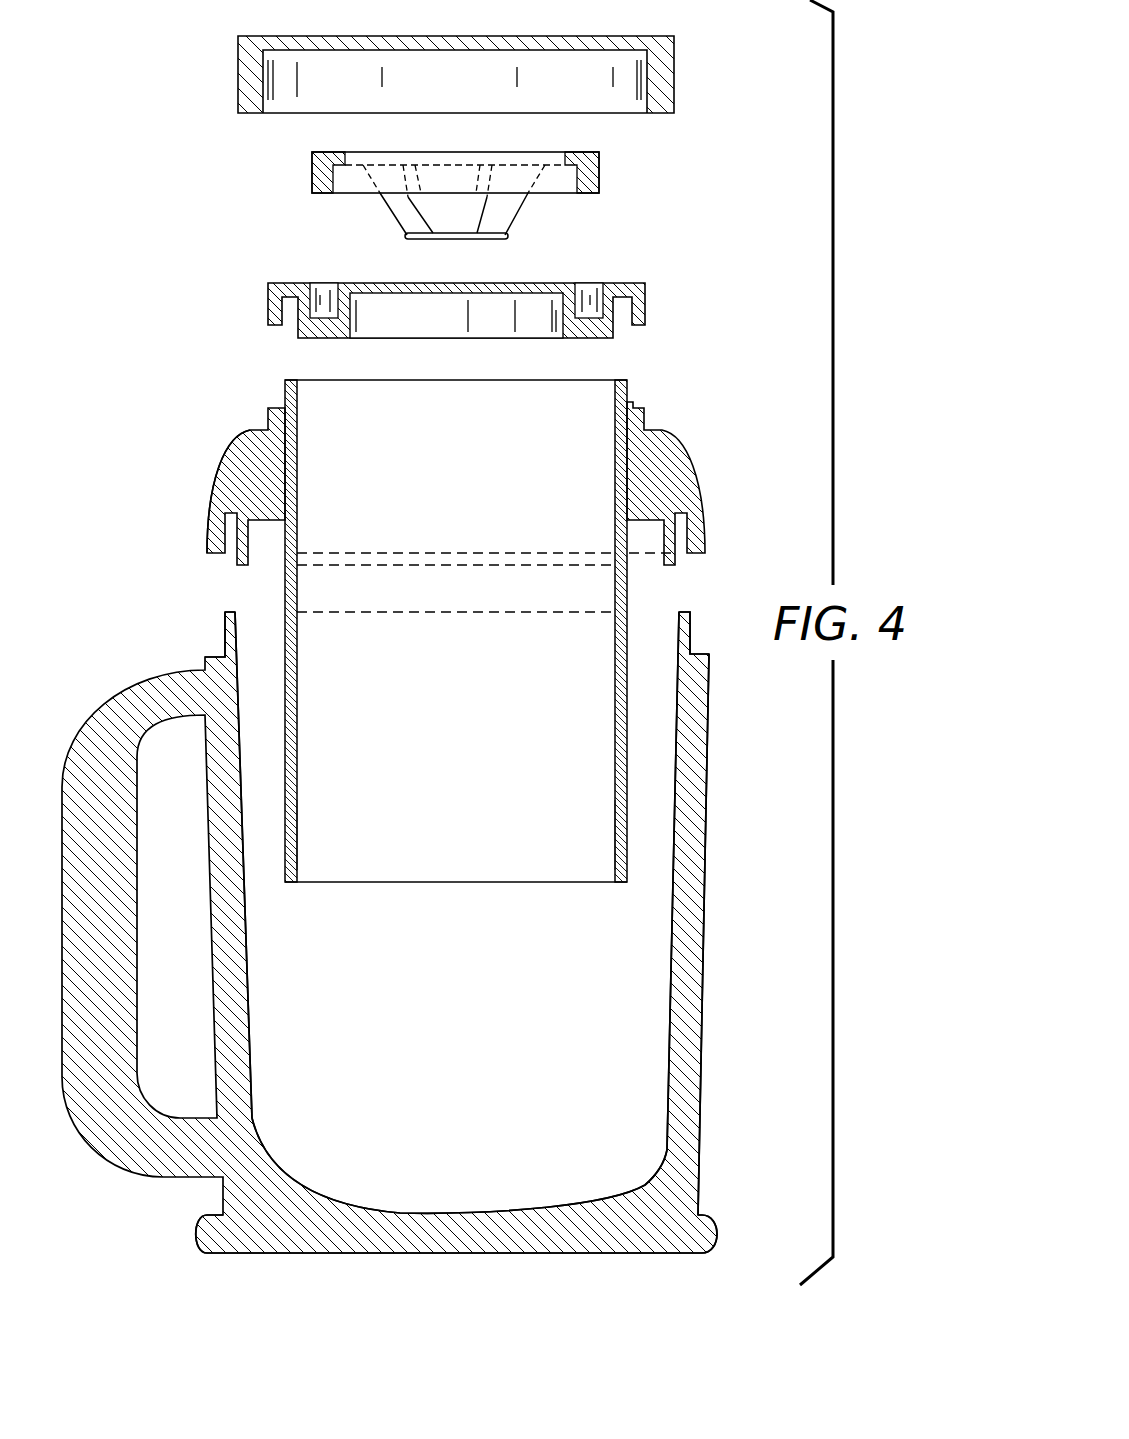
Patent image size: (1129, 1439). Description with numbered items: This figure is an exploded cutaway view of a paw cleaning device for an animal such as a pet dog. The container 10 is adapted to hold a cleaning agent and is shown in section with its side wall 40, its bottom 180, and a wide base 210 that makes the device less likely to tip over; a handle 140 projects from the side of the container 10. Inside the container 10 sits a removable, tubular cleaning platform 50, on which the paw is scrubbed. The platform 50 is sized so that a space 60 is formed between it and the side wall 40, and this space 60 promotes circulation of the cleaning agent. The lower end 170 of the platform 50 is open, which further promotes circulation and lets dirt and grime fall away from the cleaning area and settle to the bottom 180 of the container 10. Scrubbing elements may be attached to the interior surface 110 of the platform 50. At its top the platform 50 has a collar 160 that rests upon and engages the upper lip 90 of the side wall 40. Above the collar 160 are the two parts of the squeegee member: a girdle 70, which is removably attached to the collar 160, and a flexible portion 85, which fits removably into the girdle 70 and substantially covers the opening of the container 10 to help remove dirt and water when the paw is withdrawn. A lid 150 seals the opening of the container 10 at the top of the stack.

The container 10 is at (403, 965).
The side wall 40 is at (212, 983).
The cleaning platform 50 is at (466, 466).
The space 60 is at (529, 691).
The girdle 70 is at (653, 301).
The flexible portion 85 is at (606, 178).
The upper lip 90 is at (224, 637).
The interior surface 110 is at (297, 832).
The handle 140 is at (110, 690).
The lid 150 is at (683, 70).
The collar 160 is at (238, 443).
The lower end 170 is at (465, 882).
The bottom 180 is at (337, 1203).
The base 210 is at (712, 1256).